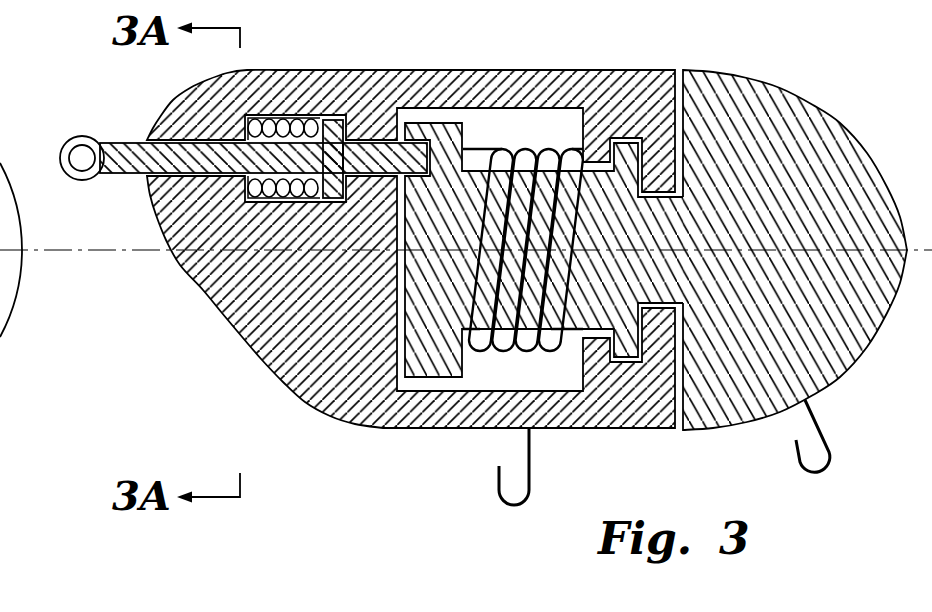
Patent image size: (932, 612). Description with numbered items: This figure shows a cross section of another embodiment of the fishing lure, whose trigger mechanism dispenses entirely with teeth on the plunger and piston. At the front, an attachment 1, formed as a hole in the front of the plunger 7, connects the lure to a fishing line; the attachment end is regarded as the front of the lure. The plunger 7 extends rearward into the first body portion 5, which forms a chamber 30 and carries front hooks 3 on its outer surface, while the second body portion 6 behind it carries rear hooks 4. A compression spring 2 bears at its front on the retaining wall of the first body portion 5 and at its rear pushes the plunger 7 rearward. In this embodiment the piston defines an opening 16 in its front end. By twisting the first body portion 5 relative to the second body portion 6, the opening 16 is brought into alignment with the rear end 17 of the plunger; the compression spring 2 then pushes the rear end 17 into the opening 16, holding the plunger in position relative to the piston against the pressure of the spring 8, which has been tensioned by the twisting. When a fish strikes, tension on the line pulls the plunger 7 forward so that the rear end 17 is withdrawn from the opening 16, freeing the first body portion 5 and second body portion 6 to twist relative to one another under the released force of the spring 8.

The attachment 1 is at (67, 142).
The compression spring 2 is at (290, 117).
The front hooks 3 is at (530, 467).
The rear hooks 4 is at (821, 413).
The first body portion 5 is at (633, 92).
The second body portion 6 is at (752, 133).
The plunger 7 is at (208, 153).
The spring 8 is at (503, 147).
The opening 16 is at (427, 152).
The rear end of the plunger 17 is at (376, 157).
The chamber 30 is at (558, 137).